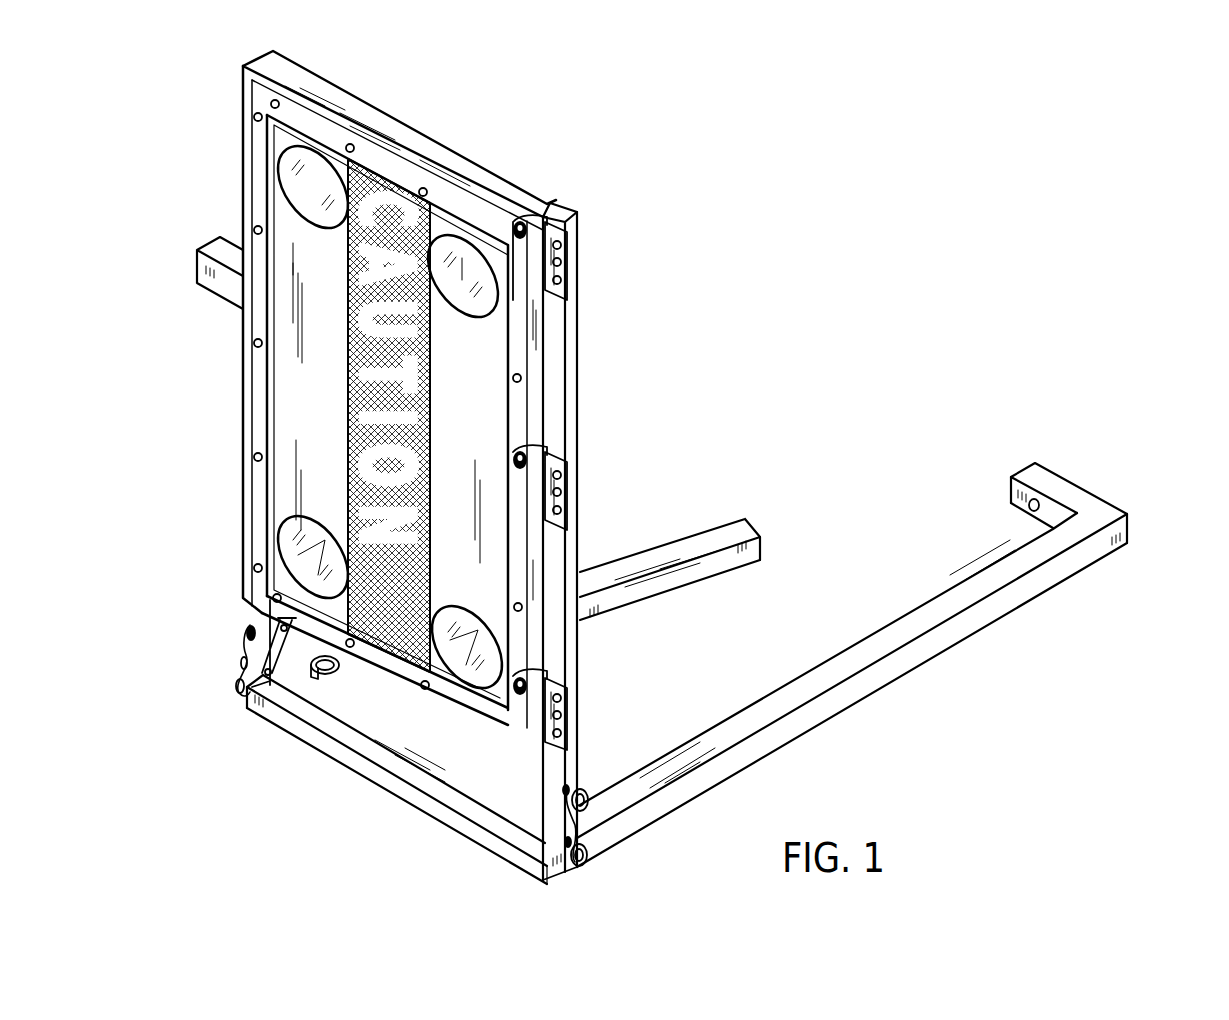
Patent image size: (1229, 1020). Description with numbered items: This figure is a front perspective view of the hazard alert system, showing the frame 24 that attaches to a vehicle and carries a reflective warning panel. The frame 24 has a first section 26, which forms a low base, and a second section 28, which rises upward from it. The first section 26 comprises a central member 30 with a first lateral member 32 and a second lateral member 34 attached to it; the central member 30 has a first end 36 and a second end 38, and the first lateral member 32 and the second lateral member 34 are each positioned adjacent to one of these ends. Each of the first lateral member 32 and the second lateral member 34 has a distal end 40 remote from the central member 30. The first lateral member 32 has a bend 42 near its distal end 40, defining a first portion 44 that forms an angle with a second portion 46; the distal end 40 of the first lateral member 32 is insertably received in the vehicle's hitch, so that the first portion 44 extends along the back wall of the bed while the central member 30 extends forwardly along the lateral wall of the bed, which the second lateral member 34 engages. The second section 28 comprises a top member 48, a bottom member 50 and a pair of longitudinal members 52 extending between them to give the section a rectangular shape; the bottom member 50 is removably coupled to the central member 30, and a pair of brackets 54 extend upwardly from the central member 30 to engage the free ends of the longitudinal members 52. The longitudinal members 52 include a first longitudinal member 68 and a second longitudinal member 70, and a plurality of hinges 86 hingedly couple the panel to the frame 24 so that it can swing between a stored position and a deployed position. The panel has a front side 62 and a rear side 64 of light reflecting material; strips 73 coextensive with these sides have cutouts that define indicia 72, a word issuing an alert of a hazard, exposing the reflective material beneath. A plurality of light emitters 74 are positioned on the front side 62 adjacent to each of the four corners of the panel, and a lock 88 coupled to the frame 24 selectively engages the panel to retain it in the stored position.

The frame 24 is at (654, 828).
The first section 26 is at (827, 645).
The second section 28 is at (590, 412).
The central member 30 is at (385, 790).
The first lateral member 32 is at (880, 690).
The second lateral member 34 is at (672, 545).
The first end 36 is at (545, 880).
The second end 38 is at (245, 700).
The distal end 40 is at (757, 522).
The bend 42 is at (1130, 520).
The first portion 44 is at (1037, 614).
The second portion 46 is at (1093, 471).
The top member 48 is at (428, 162).
The bottom member 50 is at (503, 740).
The longitudinal members 52 is at (243, 195).
The brackets 54 is at (245, 650).
The front side 62 is at (285, 405).
The rear side 64 is at (250, 445).
The first longitudinal member 68 is at (243, 365).
The second longitudinal member 70 is at (580, 278).
The indicia 72 is at (386, 186).
The strips 73 is at (330, 150).
The light emitters 74 is at (300, 168).
The hinges 86 is at (556, 232).
The lock 88 is at (200, 270).